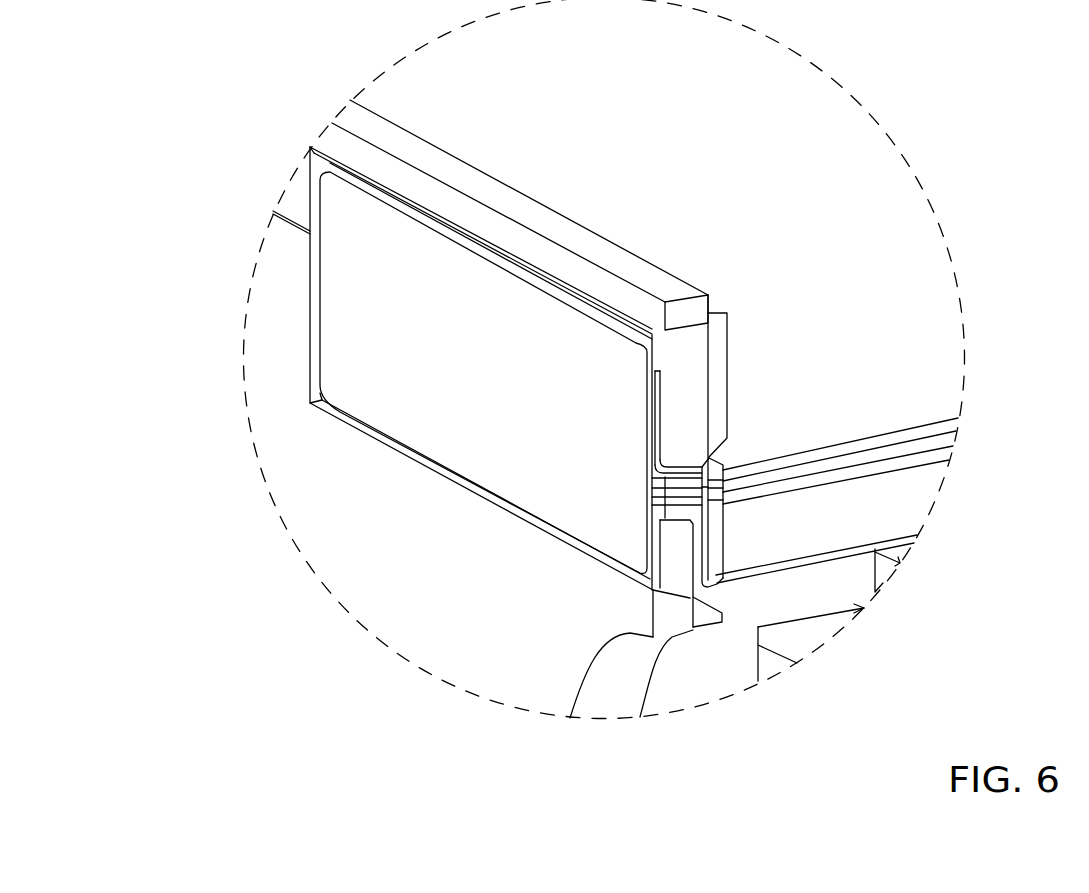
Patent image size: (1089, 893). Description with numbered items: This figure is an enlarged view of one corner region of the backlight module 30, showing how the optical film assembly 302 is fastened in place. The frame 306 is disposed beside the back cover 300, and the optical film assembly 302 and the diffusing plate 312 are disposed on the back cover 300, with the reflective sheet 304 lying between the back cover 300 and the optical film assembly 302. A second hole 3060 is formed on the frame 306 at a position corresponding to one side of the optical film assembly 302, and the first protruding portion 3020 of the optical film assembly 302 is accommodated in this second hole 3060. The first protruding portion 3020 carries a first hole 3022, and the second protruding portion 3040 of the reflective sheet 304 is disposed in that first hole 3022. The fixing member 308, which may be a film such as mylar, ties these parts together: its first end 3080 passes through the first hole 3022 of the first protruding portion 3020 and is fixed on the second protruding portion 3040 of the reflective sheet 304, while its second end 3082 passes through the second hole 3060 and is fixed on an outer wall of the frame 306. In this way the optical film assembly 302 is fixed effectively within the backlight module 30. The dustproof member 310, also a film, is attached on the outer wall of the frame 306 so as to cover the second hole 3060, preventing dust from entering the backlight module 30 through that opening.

The backlight module 30 is at (917, 110).
The back cover 300 is at (830, 613).
The optical film assembly 302 is at (930, 415).
The first protruding portion 3020 is at (678, 520).
The first hole 3022 is at (721, 522).
The reflective sheet 304 is at (840, 552).
The second protruding portion 3040 is at (702, 487).
The frame 306 is at (722, 357).
The second hole 3060 is at (664, 517).
The fixing member 308 is at (685, 462).
The first end 3080 is at (717, 503).
The second end 3082 is at (655, 392).
The dustproof member 310 is at (345, 295).
The diffusing plate 312 is at (920, 488).